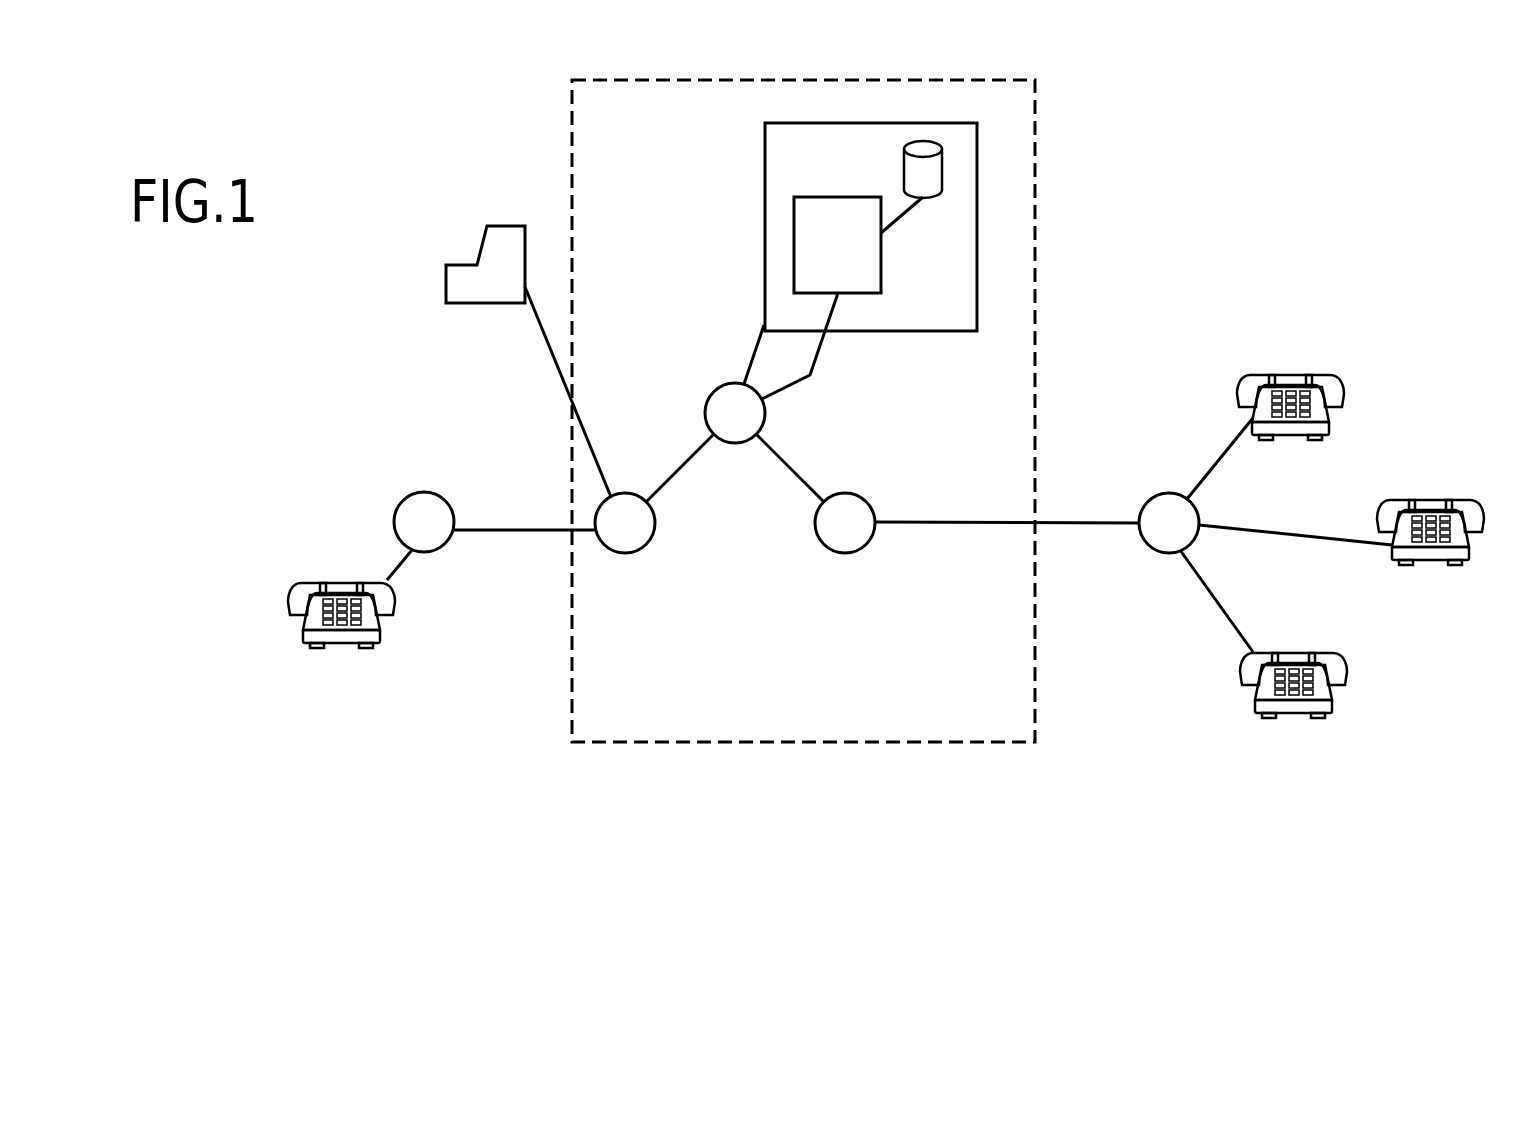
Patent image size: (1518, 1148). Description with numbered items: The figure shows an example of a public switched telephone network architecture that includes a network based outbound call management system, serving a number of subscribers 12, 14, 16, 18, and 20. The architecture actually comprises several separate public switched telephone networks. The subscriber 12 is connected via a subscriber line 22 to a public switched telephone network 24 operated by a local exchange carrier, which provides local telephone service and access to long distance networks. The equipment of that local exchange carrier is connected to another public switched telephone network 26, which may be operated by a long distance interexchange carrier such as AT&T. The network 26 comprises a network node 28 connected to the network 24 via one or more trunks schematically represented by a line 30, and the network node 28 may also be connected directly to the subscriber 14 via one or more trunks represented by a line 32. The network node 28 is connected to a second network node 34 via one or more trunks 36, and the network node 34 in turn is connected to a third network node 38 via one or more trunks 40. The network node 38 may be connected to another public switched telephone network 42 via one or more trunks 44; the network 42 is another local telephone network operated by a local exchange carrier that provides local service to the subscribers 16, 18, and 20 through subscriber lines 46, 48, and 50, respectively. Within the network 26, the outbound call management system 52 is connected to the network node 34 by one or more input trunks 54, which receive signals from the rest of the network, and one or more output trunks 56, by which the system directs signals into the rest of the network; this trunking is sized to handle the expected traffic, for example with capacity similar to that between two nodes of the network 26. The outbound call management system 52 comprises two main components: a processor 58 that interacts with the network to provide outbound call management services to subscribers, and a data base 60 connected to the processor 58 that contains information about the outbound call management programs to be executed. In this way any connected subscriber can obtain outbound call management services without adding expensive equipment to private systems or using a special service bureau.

The subscriber 12 is at (305, 643).
The subscriber 14 is at (447, 268).
The subscriber 16 is at (1343, 387).
The subscriber 18 is at (1450, 508).
The subscriber 20 is at (1338, 703).
The subscriber line 22 is at (407, 565).
The public switched telephone network 24 is at (397, 505).
The public switched telephone network 26 is at (570, 717).
The network node 28 is at (655, 533).
The line 30 is at (494, 532).
The line 32 is at (540, 330).
The network node 34 is at (708, 397).
The trunks 36 is at (677, 477).
The network node 38 is at (856, 550).
The trunks 40 is at (802, 475).
The public switched telephone network 42 is at (1148, 560).
The trunks 44 is at (1085, 522).
The subscriber line 46 is at (1212, 457).
The subscriber line 48 is at (1310, 540).
The subscriber line 50 is at (1213, 603).
The outbound call management system 52 is at (935, 297).
The input trunks 54 is at (752, 345).
The output trunks 56 is at (814, 377).
The processor 58 is at (884, 258).
The data base 60 is at (905, 165).